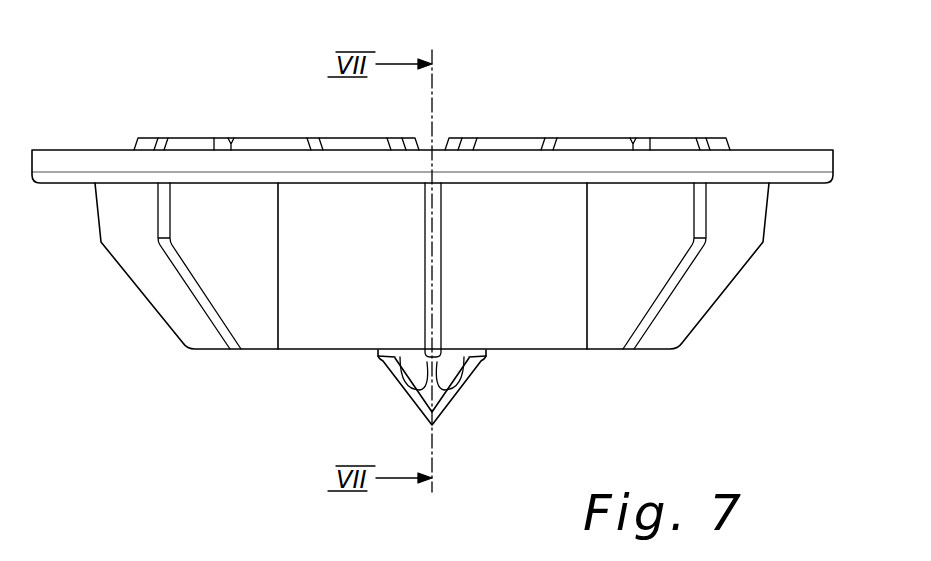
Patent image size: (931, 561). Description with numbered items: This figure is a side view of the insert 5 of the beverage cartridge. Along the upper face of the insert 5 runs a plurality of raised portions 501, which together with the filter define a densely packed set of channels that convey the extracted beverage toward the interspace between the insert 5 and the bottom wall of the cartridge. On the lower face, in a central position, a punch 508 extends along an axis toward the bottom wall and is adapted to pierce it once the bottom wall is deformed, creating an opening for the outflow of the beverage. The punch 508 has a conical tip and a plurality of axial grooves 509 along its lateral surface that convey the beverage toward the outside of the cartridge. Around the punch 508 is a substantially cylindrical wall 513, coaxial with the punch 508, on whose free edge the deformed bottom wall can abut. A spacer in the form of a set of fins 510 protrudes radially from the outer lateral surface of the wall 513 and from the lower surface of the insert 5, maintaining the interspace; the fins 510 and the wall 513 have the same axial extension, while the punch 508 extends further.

The insert 5 is at (108, 118).
The raised portions 501 is at (265, 147).
The punch 508 is at (442, 402).
The axial grooves 509 is at (408, 362).
The set of fins 510 is at (243, 312).
The substantially cylindrical wall 513 is at (560, 317).